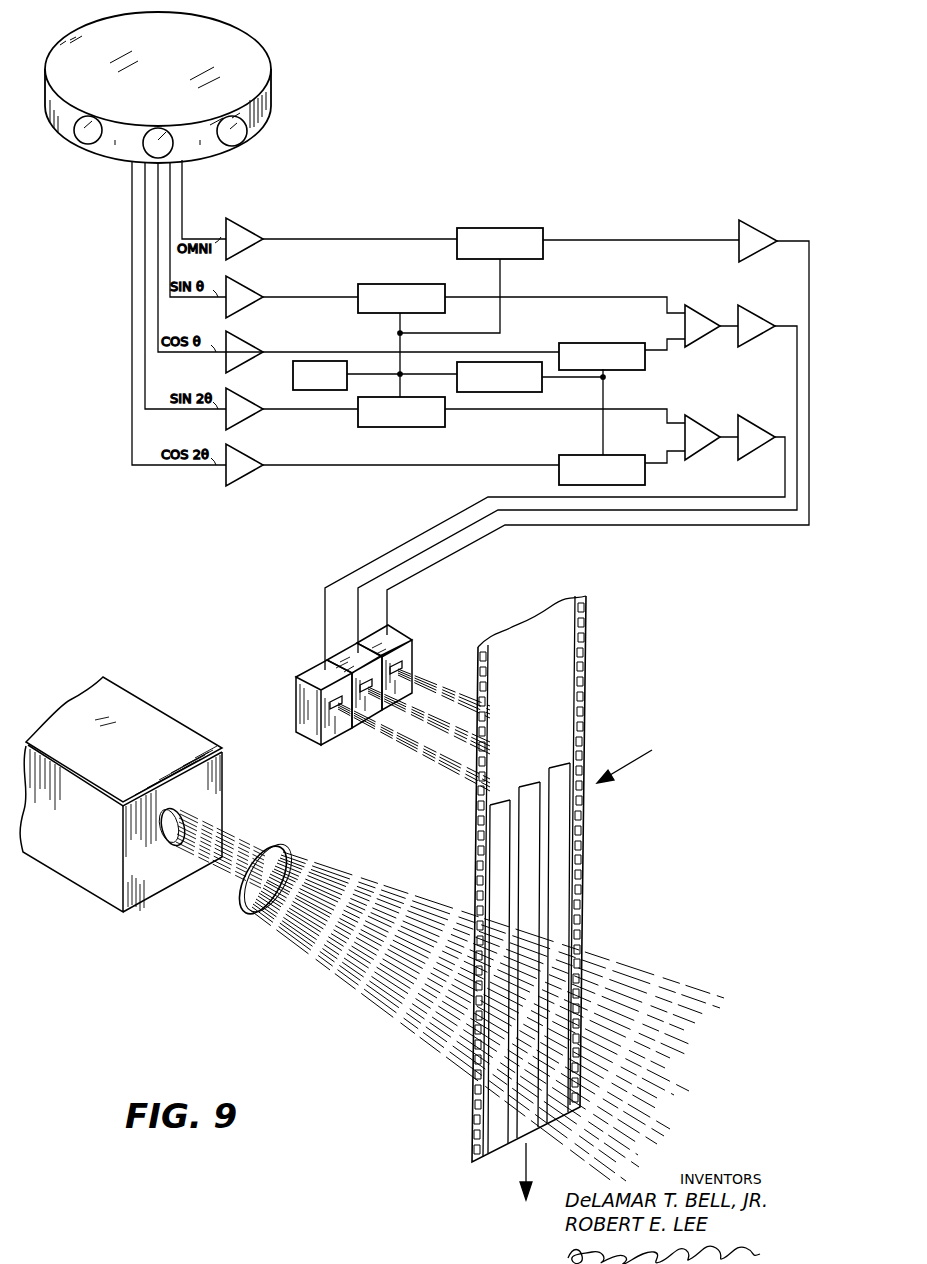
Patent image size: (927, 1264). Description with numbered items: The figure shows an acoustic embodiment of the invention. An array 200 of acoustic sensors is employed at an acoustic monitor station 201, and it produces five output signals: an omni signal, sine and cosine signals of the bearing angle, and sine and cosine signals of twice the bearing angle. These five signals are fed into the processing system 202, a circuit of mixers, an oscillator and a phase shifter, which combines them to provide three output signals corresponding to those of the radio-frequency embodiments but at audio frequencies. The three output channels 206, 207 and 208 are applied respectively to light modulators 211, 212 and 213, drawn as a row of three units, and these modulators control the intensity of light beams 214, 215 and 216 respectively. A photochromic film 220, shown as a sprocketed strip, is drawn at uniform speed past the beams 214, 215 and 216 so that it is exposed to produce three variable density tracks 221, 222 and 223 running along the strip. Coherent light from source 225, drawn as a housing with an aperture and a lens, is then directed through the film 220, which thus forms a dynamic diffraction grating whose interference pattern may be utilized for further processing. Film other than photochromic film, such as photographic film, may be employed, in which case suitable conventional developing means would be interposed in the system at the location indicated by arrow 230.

The array of acoustic sensors 200 is at (170, 93).
The acoustic monitor station 201 is at (292, 32).
The processing system 202 is at (508, 209).
The output channel 206 is at (809, 289).
The output channel 207 is at (797, 368).
The output channel 208 is at (785, 478).
The light modulator 211 is at (397, 638).
The light modulator 212 is at (350, 648).
The light modulator 213 is at (316, 672).
The light beam 214 is at (438, 697).
The light beam 215 is at (470, 752).
The light beam 216 is at (415, 757).
The photochromic film 220 is at (563, 672).
The variable density track 221 is at (560, 918).
The variable density track 222 is at (535, 962).
The variable density track 223 is at (497, 881).
The coherent light source 225 is at (165, 720).
The arrow 230 is at (628, 765).